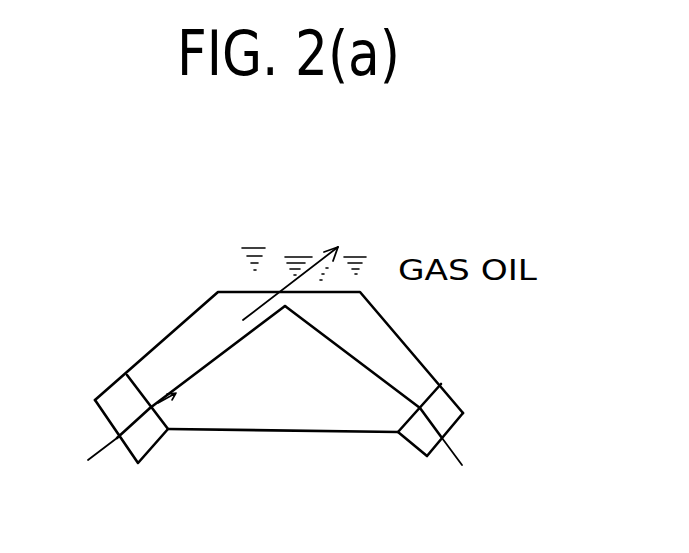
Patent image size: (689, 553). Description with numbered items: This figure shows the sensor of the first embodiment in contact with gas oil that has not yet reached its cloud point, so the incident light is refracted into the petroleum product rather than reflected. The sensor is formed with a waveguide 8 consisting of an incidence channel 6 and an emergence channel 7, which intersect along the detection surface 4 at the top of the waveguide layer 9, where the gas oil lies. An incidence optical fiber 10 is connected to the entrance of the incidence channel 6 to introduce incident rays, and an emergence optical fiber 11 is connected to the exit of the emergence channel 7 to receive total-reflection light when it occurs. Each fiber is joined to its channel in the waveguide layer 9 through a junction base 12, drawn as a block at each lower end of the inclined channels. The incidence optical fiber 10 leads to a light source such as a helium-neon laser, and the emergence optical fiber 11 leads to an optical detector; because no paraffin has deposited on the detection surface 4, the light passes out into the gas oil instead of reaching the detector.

The detection surface 4 is at (234, 291).
The incidence channel 6 is at (197, 365).
The emergence channel 7 is at (387, 366).
The waveguide 8 is at (294, 383).
The waveguide layer 9 is at (161, 247).
The incidence optical fiber 10 is at (100, 447).
The emergence optical fiber 11 is at (450, 443).
The junction base 12 is at (133, 442).